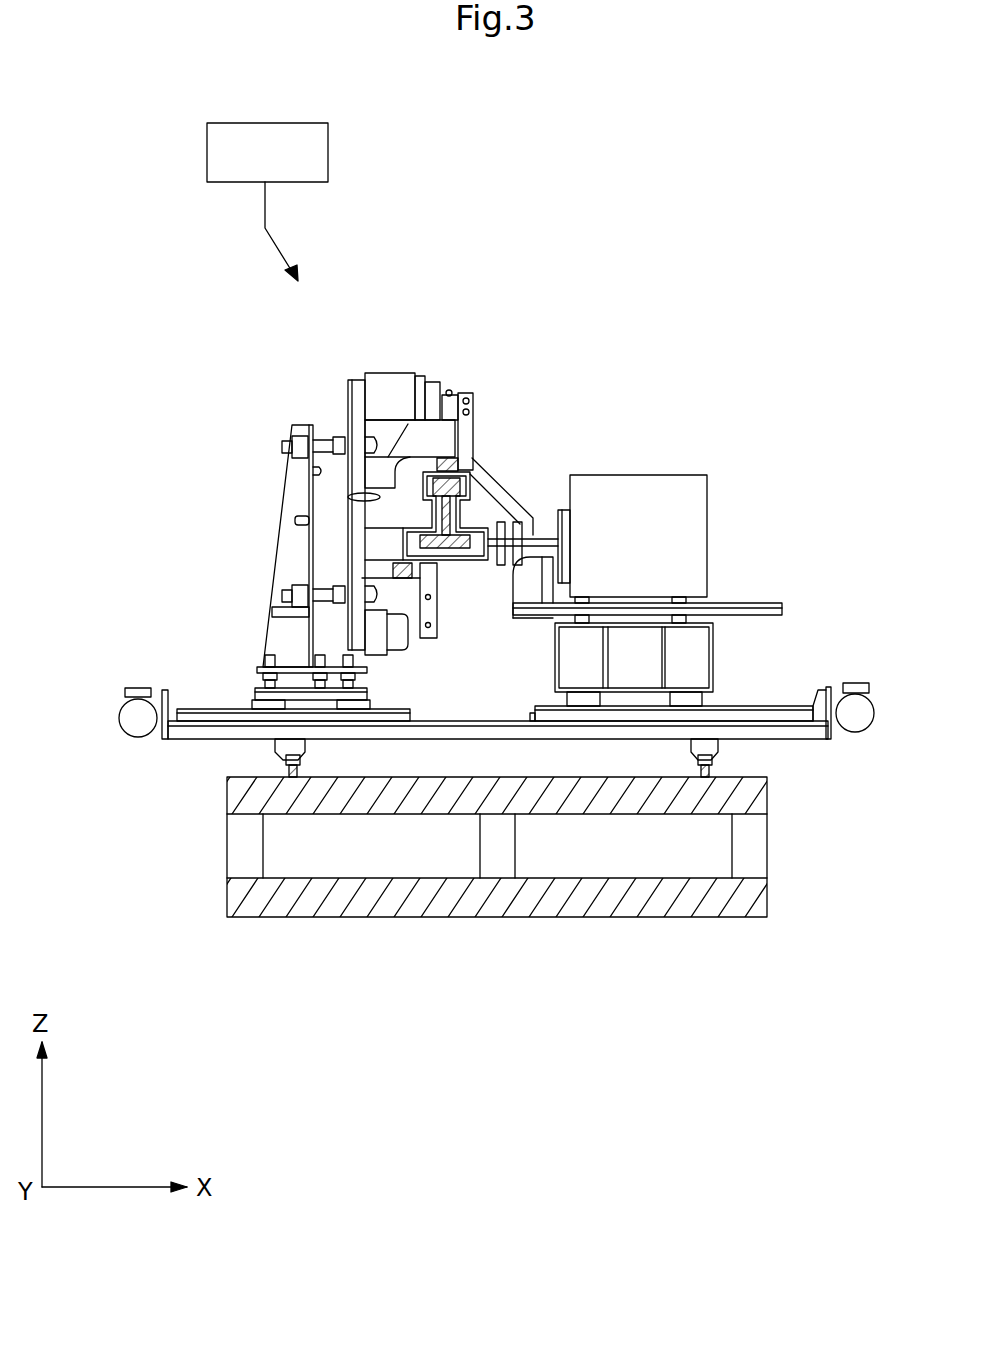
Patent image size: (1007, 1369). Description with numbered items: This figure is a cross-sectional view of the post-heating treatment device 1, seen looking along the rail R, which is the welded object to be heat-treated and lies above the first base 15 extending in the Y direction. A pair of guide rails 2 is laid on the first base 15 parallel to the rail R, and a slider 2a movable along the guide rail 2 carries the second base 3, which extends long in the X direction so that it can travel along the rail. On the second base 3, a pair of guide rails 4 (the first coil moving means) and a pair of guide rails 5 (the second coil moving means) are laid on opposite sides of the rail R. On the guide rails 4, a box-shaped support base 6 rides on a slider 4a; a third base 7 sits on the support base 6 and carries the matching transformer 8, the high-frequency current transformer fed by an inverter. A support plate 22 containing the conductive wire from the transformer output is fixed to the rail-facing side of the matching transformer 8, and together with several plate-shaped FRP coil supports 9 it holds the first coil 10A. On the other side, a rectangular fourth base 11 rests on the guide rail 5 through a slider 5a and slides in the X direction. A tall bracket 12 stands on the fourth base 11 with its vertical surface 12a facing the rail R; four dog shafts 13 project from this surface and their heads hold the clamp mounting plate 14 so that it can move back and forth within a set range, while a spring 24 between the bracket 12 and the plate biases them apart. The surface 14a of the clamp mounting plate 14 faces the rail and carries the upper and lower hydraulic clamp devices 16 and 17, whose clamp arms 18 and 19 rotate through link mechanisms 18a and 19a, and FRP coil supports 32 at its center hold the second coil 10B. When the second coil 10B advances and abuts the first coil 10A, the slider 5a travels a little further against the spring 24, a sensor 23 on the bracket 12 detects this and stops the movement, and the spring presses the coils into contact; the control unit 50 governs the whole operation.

The post-heating treatment device 1 is at (146, 200).
The guide rail 2 is at (288, 770).
The slider 2a is at (285, 755).
The second base 3 is at (456, 722).
The guide rail 4 is at (790, 706).
The slider 4a is at (702, 700).
The guide rail 5 is at (180, 709).
The slider 5a is at (255, 700).
The support base 6 is at (713, 640).
The third base 7 is at (765, 603).
The matching transformer 8 is at (707, 505).
The coil support 9 is at (484, 470).
The first coil 10A is at (432, 576).
The second coil 10B is at (348, 497).
The fourth base 11 is at (258, 667).
The bracket 12 is at (298, 430).
The vertical surface 12a is at (282, 446).
The dog shaft 13 is at (322, 436).
The clamp mounting plate 14 is at (348, 382).
The surface 14a is at (313, 471).
The first base 15 is at (767, 830).
The hydraulic clamp device 16 is at (390, 396).
The hydraulic clamp device 17 is at (424, 700).
The clamp arm 18 is at (472, 428).
The link mechanism 18a is at (455, 395).
The clamp arm 19 is at (432, 608).
The link mechanism 19a is at (425, 640).
The support plate 22 is at (548, 540).
The sensor 23 is at (273, 612).
The spring 24 is at (296, 522).
The coil support 32 is at (391, 469).
The control unit 50 is at (328, 140).
The rail R is at (455, 482).